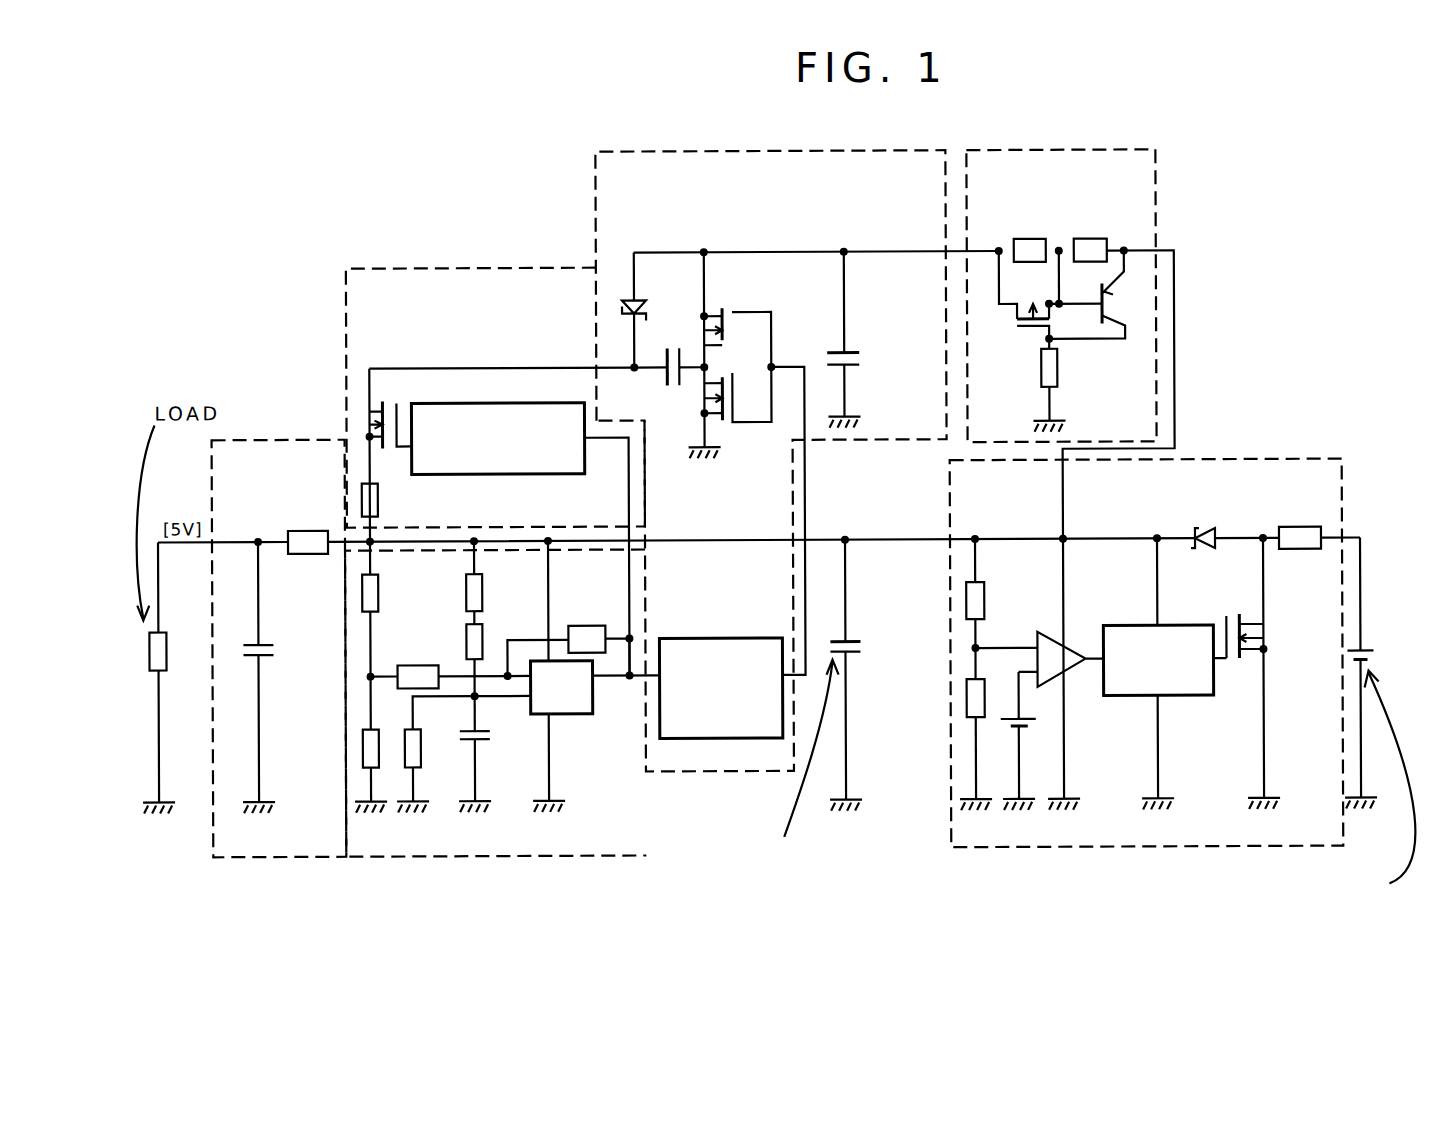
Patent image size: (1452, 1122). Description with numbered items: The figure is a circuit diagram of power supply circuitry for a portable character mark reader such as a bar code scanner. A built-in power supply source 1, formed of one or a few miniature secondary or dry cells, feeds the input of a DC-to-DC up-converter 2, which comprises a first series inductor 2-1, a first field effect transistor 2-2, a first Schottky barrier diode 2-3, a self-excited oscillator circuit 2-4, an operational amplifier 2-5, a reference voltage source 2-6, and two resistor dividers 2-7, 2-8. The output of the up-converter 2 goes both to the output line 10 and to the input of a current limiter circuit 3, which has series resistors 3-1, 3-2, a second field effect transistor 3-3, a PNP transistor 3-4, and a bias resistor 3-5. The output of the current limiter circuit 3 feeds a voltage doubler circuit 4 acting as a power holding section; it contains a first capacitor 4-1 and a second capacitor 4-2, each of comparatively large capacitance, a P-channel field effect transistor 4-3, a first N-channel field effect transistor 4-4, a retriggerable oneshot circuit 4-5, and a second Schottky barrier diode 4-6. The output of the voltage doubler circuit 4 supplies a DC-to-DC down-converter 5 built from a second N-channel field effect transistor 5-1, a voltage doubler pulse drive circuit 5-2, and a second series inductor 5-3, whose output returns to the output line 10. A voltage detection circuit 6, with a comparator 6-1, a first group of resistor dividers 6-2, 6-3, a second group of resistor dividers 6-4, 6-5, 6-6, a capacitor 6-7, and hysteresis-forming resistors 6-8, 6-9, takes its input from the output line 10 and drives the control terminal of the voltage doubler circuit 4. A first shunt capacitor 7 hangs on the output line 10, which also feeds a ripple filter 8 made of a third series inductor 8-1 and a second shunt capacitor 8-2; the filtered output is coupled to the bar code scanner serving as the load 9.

The built-in power supply source 1 is at (1374, 653).
The DC-to-DC up-converter 2 is at (1268, 460).
The first series inductor 2-1 is at (1321, 532).
The first field effect transistor 2-2 is at (1265, 641).
The first Schottky barrier diode 2-3 is at (1204, 550).
The self-excited oscillator circuit 2-4 is at (1195, 697).
The operational amplifier 2-5 is at (1073, 642).
The reference voltage source 2-6 is at (1038, 710).
The resistor divider 2-7 is at (985, 600).
The resistor divider 2-8 is at (966, 704).
The current limiter circuit 3 is at (1108, 151).
The series resistor 3-1 is at (1108, 244).
The series resistor 3-2 is at (1047, 240).
The second field effect transistor 3-3 is at (1022, 334).
The PNP transistor 3-4 is at (1114, 306).
The bias resistor 3-5 is at (1060, 382).
The voltage doubler circuit 4 is at (680, 151).
The first capacitor 4-1 is at (860, 353).
The second capacitor 4-2 is at (670, 348).
The P-channel field effect transistor 4-3 is at (736, 328).
The first N-channel field effect transistor 4-4 is at (735, 424).
The retriggerable oneshot circuit 4-5 is at (745, 638).
The second Schottky barrier diode 4-6 is at (641, 301).
The DC-to-DC down-converter 5 is at (487, 266).
The second N-channel field effect transistor 5-1 is at (399, 412).
The voltage doubler pulse drive circuit 5-2 is at (510, 404).
The second series inductor 5-3 is at (380, 490).
The voltage detection circuit 6 is at (588, 858).
The comparator 6-1 is at (566, 715).
The resistor divider 6-2 is at (379, 592).
The resistor divider 6-3 is at (362, 742).
The resistor divider 6-4 is at (483, 588).
The resistor divider 6-5 is at (483, 640).
The resistor divider 6-6 is at (421, 745).
The capacitor 6-7 is at (478, 738).
The hysteresis-forming resistor 6-8 is at (399, 686).
The hysteresis-forming resistor 6-9 is at (605, 642).
The first shunt capacitor 7 is at (855, 642).
The ripple filter 8 is at (255, 437).
The third series inductor 8-1 is at (301, 530).
The second shunt capacitor 8-2 is at (262, 645).
The bar code scanner 9 is at (166, 632).
The output line 10 is at (716, 538).